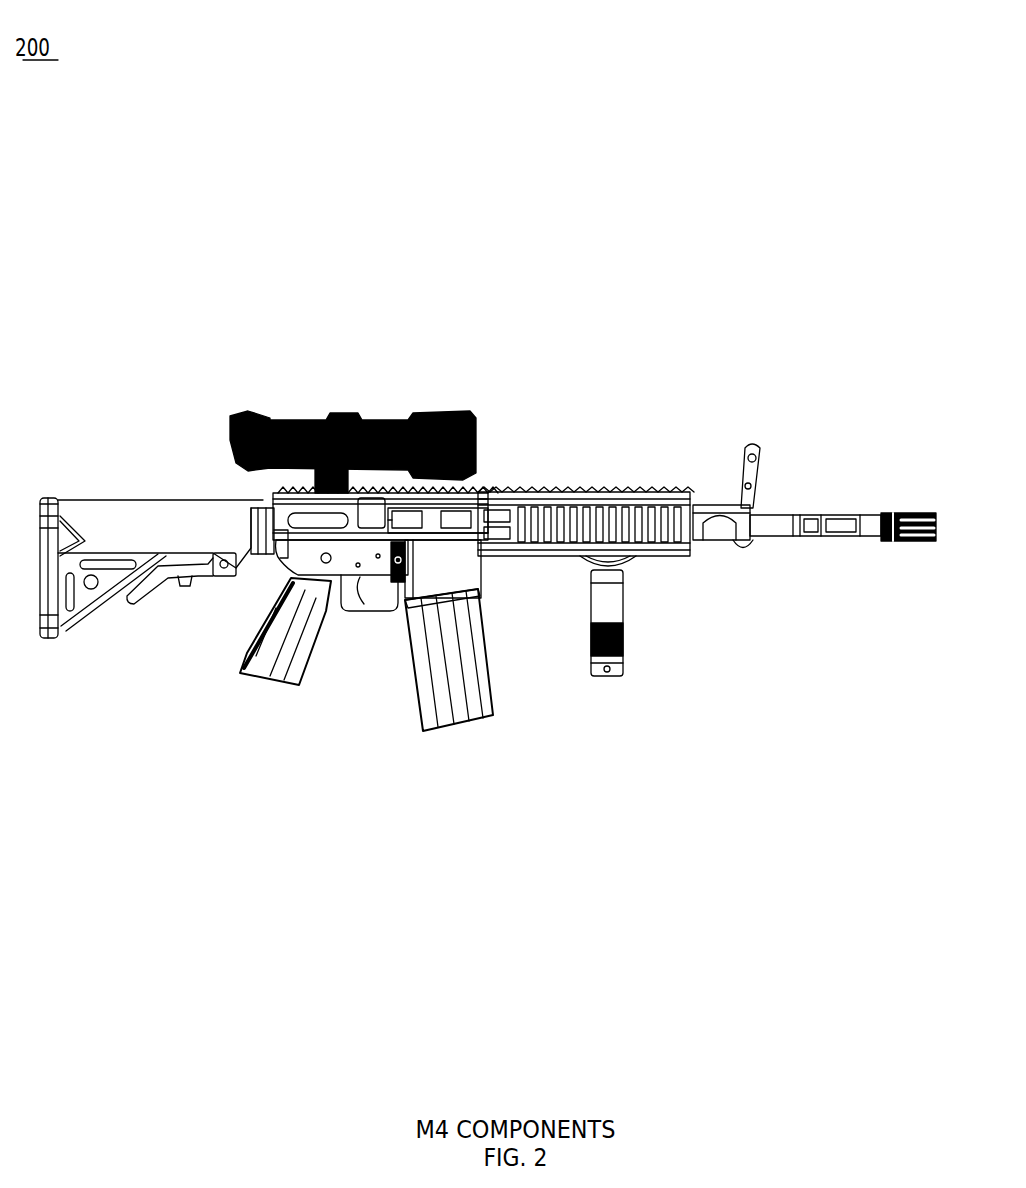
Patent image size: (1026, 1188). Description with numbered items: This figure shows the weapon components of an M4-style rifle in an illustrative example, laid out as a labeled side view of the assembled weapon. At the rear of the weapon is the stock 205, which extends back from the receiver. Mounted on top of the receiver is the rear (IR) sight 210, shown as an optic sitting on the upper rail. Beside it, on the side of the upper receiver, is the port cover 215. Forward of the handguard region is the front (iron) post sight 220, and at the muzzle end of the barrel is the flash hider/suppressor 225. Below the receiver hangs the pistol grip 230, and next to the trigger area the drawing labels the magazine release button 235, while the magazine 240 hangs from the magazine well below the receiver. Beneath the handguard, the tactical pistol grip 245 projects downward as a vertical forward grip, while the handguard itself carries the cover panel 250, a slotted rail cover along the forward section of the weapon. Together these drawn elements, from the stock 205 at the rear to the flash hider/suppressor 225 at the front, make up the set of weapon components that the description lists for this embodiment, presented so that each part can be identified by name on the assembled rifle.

The stock 205 is at (188, 500).
The rear (IR) sight 210 is at (287, 403).
The port cover 215 is at (467, 497).
The front (iron) post sight 220 is at (730, 458).
The flash hider/suppressor 225 is at (905, 502).
The pistol grip 230 is at (231, 666).
The magazine release button 235 is at (380, 570).
The magazine release button 240 is at (453, 712).
The tactical pistol grip 245 is at (608, 668).
The cover panel 250 is at (665, 558).